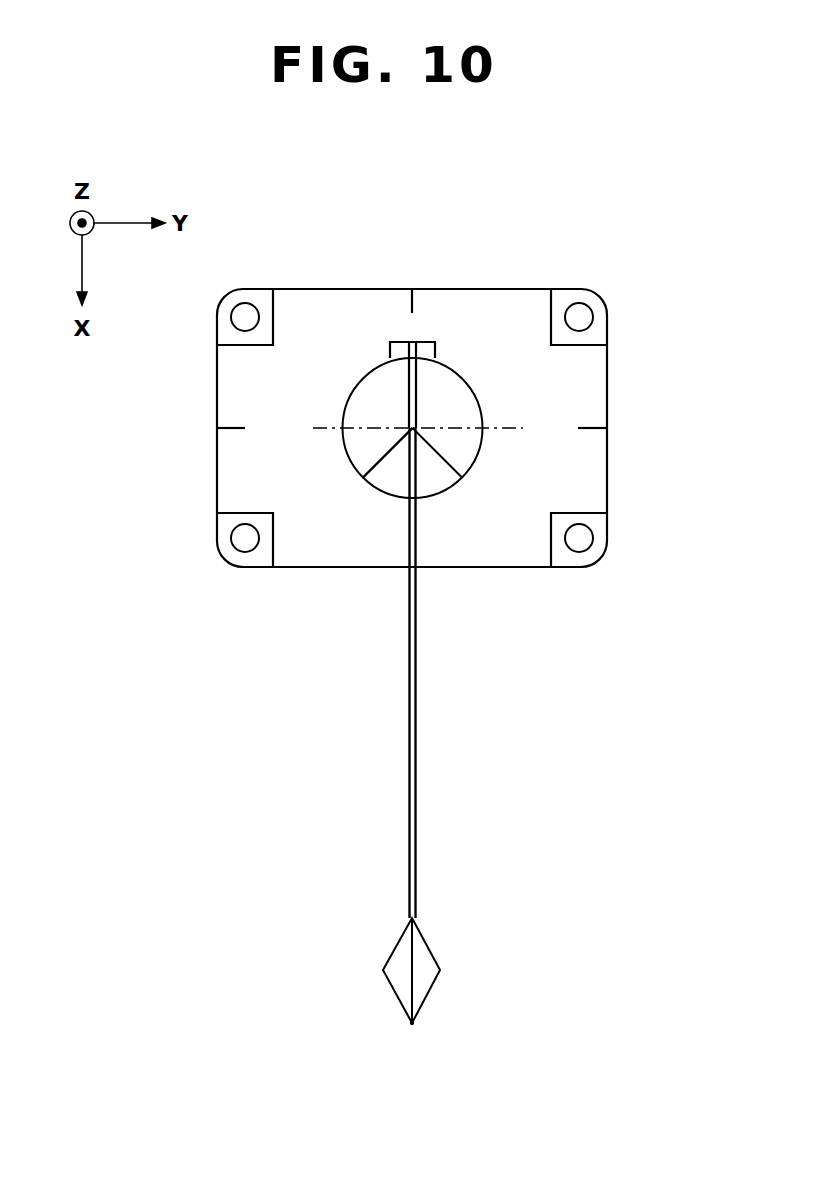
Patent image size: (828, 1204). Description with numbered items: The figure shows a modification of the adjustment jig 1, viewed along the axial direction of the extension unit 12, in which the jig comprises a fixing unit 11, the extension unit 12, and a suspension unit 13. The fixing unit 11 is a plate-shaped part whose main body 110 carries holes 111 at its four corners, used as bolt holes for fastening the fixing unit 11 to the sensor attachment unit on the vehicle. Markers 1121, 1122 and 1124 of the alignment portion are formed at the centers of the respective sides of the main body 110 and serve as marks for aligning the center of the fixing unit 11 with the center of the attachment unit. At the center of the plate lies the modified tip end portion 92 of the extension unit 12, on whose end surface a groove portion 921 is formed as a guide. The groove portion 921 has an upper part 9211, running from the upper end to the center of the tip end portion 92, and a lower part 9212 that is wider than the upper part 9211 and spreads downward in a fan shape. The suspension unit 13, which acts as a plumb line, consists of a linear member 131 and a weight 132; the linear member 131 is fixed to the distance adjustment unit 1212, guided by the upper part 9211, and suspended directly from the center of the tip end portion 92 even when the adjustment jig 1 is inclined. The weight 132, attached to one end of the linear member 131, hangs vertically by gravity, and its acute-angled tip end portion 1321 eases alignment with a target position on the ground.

The adjustment jig 1 is at (535, 217).
The fixing unit 11 is at (349, 236).
The main body 110 is at (305, 289).
The holes 111 is at (245, 303).
The marker 1121 is at (413, 308).
The marker 1122 is at (588, 428).
The marker 1124 is at (226, 425).
The extension unit 12 is at (315, 454).
The distance adjustment unit 1212 is at (392, 342).
The tip end portion 92 is at (353, 390).
The groove portion 921 is at (459, 508).
The upper part 9211 is at (417, 400).
The lower part 9212 is at (363, 470).
The suspension unit 13 is at (460, 722).
The linear member 131 is at (417, 815).
The weight 132 is at (447, 974).
The tip end portion 1321 is at (412, 1023).